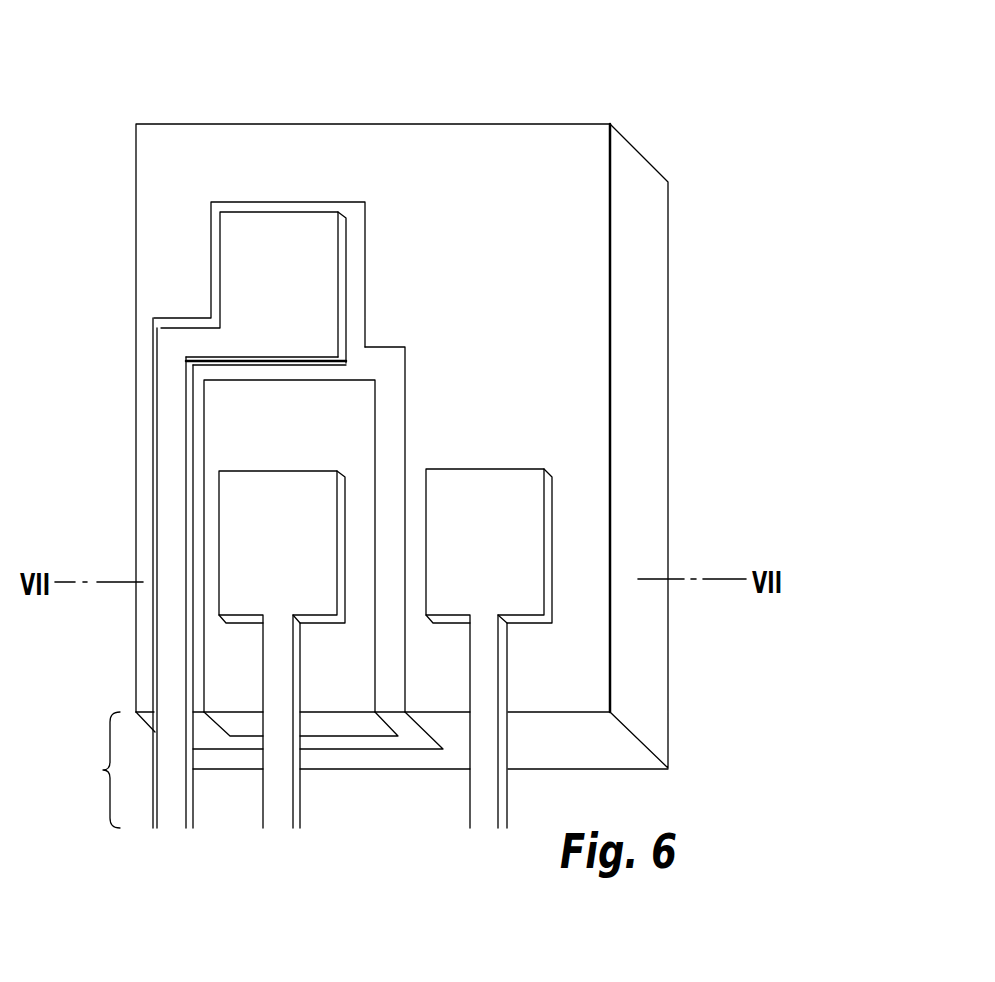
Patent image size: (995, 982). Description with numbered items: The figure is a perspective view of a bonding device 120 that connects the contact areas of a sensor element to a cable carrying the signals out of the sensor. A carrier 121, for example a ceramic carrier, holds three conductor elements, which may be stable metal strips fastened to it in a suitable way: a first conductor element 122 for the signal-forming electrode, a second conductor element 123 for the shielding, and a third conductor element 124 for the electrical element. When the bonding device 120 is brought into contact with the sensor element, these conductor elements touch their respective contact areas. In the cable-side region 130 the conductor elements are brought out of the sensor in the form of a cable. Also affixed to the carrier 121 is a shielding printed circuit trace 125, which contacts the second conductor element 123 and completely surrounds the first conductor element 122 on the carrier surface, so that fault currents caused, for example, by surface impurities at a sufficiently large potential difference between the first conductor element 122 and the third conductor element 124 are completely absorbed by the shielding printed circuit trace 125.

The bonding device 120 is at (688, 128).
The carrier 121 is at (572, 295).
The first conductor element 122 is at (253, 510).
The second conductor element 123 is at (170, 397).
The third conductor element 124 is at (490, 495).
The shielding printed circuit trace 125 is at (387, 357).
The cable-side region 130 is at (101, 770).